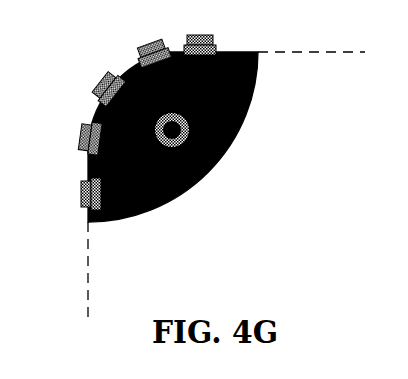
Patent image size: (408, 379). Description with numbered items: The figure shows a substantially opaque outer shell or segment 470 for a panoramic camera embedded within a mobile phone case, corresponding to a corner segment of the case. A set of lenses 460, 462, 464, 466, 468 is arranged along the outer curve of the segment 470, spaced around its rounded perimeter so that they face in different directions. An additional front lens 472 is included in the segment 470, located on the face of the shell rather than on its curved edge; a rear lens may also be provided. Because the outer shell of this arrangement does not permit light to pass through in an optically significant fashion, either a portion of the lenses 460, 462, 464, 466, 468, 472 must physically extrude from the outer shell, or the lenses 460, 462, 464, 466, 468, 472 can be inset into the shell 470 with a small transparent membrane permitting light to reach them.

The lens 460 is at (80, 206).
The lens 462 is at (87, 126).
The lens 464 is at (111, 71).
The lens 466 is at (172, 32).
The lens 468 is at (215, 43).
The outer shell or segment 470 is at (252, 106).
The front lens 472 is at (173, 131).